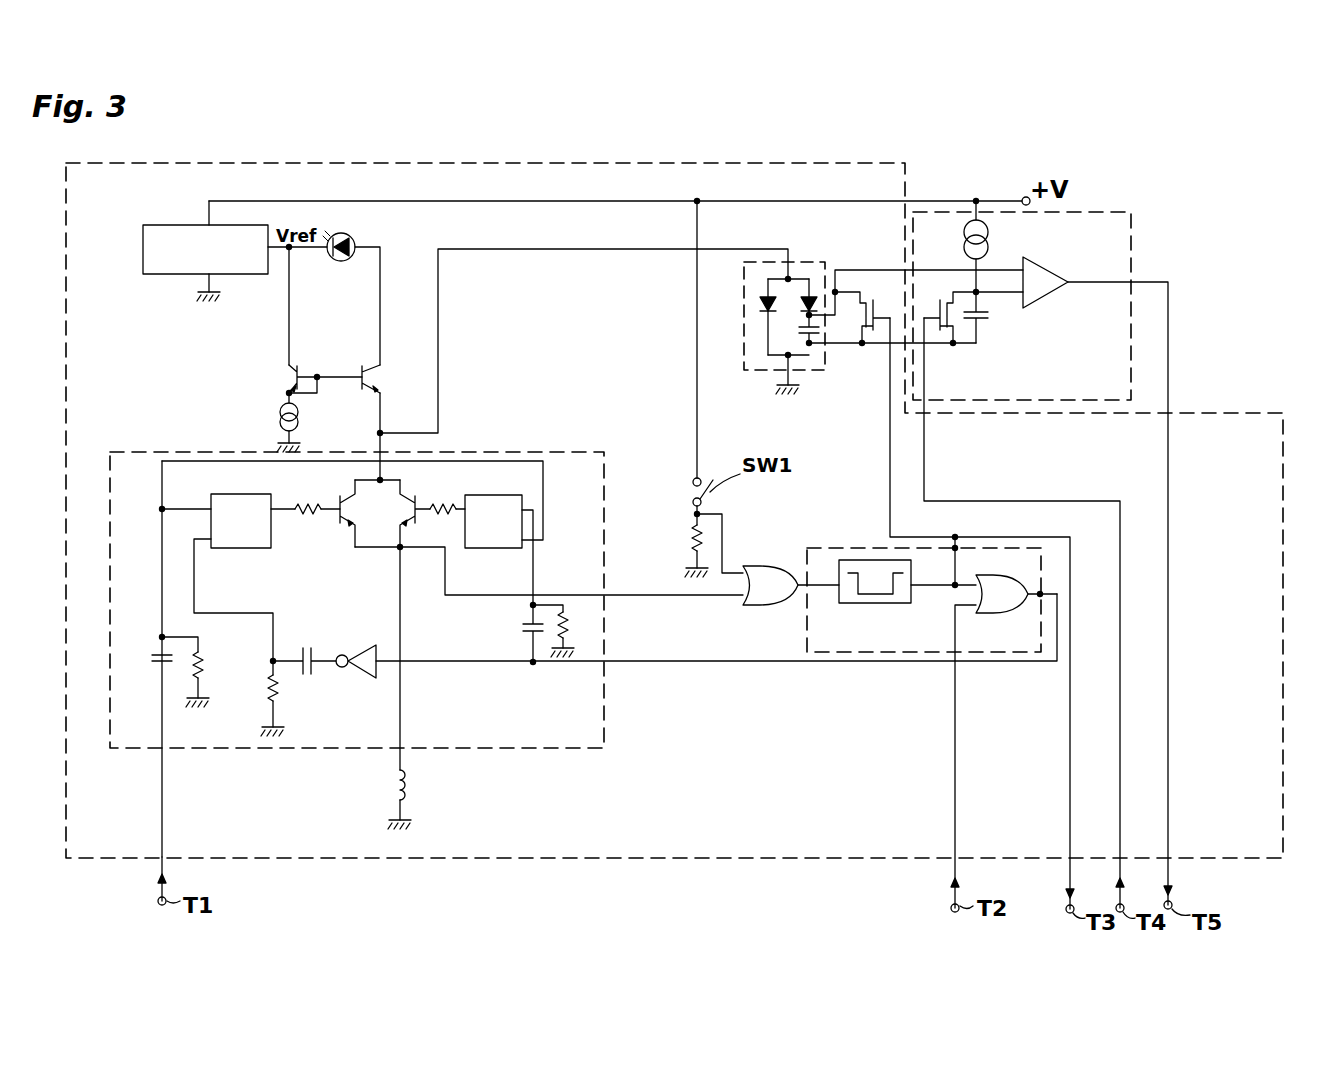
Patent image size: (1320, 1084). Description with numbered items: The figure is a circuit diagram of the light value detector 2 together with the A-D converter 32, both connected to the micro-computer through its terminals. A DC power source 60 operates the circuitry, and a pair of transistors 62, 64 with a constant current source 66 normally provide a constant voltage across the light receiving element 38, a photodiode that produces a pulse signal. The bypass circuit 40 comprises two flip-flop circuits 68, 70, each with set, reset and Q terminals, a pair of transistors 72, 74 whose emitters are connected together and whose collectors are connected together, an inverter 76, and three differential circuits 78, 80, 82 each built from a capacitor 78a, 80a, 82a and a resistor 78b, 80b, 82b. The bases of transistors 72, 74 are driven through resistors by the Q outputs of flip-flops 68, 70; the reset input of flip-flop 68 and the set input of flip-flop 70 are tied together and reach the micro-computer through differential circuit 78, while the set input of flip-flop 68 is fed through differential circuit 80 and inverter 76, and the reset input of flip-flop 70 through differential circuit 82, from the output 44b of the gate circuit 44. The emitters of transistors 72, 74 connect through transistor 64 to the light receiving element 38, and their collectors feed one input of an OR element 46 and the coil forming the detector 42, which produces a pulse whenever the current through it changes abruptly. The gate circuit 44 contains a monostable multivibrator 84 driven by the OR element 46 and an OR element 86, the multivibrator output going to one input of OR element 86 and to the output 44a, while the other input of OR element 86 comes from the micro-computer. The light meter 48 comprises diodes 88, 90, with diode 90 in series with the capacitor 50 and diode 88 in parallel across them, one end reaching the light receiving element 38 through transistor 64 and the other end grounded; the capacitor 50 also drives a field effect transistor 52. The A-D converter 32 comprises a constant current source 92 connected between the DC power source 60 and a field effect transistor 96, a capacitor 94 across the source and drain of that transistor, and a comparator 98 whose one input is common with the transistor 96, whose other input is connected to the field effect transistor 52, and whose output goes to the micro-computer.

The light value detector 2 is at (840, 163).
The A-D converter 32 is at (1131, 238).
The light receiving element 38 is at (346, 237).
The bypass circuit 40 is at (572, 748).
The detector 42 is at (406, 782).
The gate circuit 44 is at (967, 618).
The output of the gate circuit 44a is at (958, 540).
The output of the gate circuit 44b is at (1044, 592).
The OR element 46 is at (766, 603).
The light meter 48 is at (812, 262).
The capacitor 50 is at (818, 335).
The field effect transistor 52 is at (866, 300).
The DC power source 60 is at (155, 277).
The transistor 62 is at (290, 378).
The transistor 64 is at (366, 377).
The constant current source 66 is at (279, 416).
The flip-flop circuit 68 is at (256, 550).
The flip-flop circuit 70 is at (488, 550).
The transistor 72 is at (342, 516).
The transistor 74 is at (408, 503).
The inverter 76 is at (360, 680).
The differential circuit 78 is at (189, 683).
The capacitor 78a is at (152, 666).
The resistor 78b is at (202, 660).
The differential circuit 80 is at (285, 671).
The capacitor 80a is at (306, 648).
The resistor 80b is at (249, 698).
The differential circuit 82 is at (550, 651).
The capacitor 82a is at (522, 628).
The resistor 82b is at (570, 628).
The monostable multivibrator 84 is at (853, 600).
The OR element 86 is at (1000, 603).
The diode 88 is at (762, 310).
The diode 90 is at (805, 302).
The constant current source 92 is at (989, 233).
The capacitor 94 is at (990, 316).
The field effect transistor 96 is at (946, 330).
The comparator 98 is at (1044, 287).